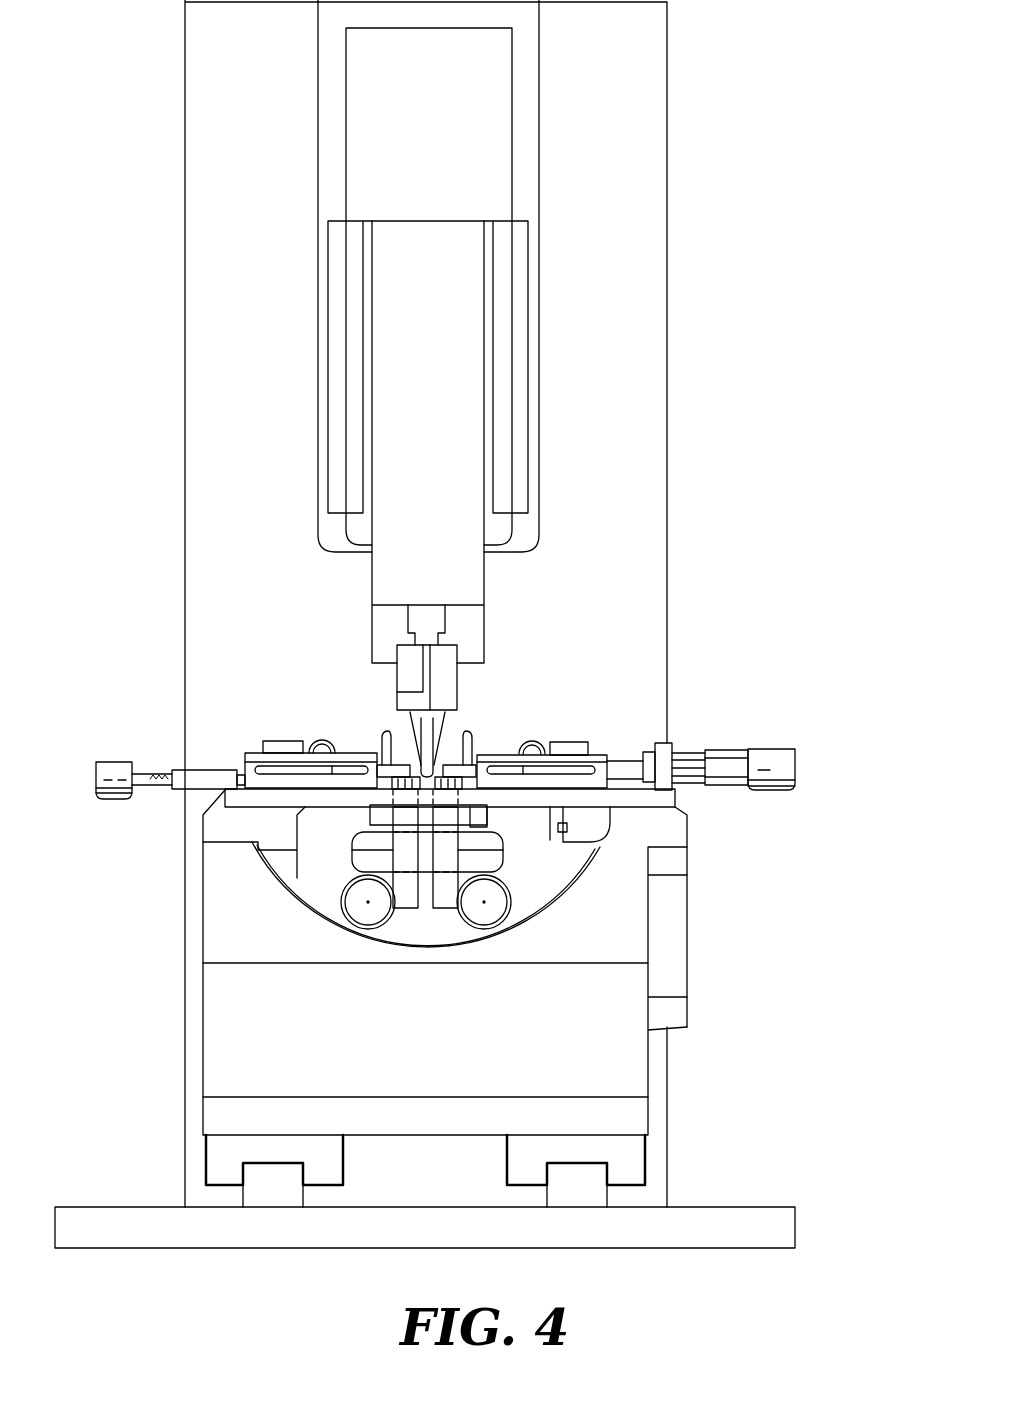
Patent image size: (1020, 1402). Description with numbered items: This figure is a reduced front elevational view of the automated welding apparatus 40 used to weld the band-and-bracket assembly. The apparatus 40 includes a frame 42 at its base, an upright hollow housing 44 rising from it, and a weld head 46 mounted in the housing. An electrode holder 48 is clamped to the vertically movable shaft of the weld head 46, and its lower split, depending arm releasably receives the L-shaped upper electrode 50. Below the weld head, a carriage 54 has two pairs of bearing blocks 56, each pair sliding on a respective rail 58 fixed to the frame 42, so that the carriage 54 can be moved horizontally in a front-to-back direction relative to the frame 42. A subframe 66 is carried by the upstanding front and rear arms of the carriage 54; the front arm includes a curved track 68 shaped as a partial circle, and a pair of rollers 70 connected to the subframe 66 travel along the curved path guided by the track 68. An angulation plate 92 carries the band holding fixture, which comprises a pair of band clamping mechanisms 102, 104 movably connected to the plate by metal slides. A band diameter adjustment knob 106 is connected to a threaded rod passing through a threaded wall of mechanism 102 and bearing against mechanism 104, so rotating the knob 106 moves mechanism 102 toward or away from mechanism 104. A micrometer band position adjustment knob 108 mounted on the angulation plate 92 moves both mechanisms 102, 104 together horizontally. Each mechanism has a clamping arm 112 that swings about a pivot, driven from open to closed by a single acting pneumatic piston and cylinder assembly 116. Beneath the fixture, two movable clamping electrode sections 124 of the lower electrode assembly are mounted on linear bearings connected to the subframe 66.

The automated welding apparatus 40 is at (694, 324).
The frame 42 is at (133, 1230).
The upright hollow housing 44 is at (662, 162).
The weld head 46 is at (470, 355).
The electrode holder 48 is at (455, 688).
The upper electrode 50 is at (445, 735).
The carriage 54 is at (213, 943).
The bearing blocks 56 is at (345, 1165).
The rail 58 is at (279, 1203).
The subframe 66 is at (317, 885).
The curved track 68 is at (266, 862).
The rollers 70 is at (360, 917).
The angulation plate 92 is at (675, 799).
The band clamping mechanism 102 is at (250, 755).
The band clamping mechanism 104 is at (603, 755).
The band diameter adjustment knob 106 is at (106, 762).
The micrometer band position adjustment knob 108 is at (772, 750).
The clamping arm 112 is at (386, 745).
The single acting pneumatic piston and cylinder assembly 116 is at (318, 740).
The clamping electrode sections 124 is at (440, 910).